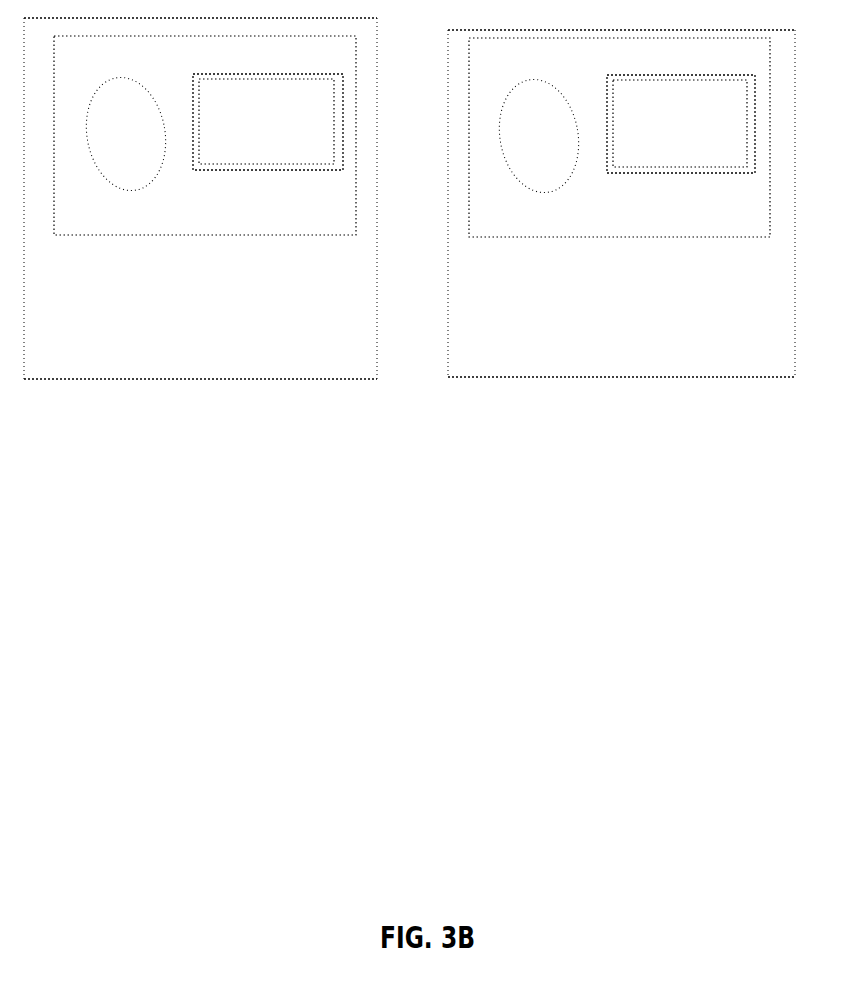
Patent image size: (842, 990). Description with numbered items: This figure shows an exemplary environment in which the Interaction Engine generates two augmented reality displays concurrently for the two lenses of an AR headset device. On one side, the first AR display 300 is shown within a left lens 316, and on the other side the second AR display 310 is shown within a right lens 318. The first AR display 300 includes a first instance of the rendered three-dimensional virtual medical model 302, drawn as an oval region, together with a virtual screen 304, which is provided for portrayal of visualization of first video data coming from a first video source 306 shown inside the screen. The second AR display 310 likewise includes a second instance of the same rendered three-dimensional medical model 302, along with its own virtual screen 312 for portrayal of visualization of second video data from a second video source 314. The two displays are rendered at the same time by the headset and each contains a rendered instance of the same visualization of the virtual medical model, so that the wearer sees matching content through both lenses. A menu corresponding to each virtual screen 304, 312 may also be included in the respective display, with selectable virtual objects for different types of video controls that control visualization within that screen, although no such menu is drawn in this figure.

The first AR display 300 is at (105, 68).
The rendered 3D virtual medical model 302 is at (150, 150).
The virtual screen 304 is at (274, 184).
The first video source 306 is at (287, 132).
The second AR display 310 is at (520, 72).
The virtual screen 312 is at (688, 190).
The second video source 314 is at (701, 134).
The left lens 316 is at (152, 368).
The right lens 318 is at (564, 366).